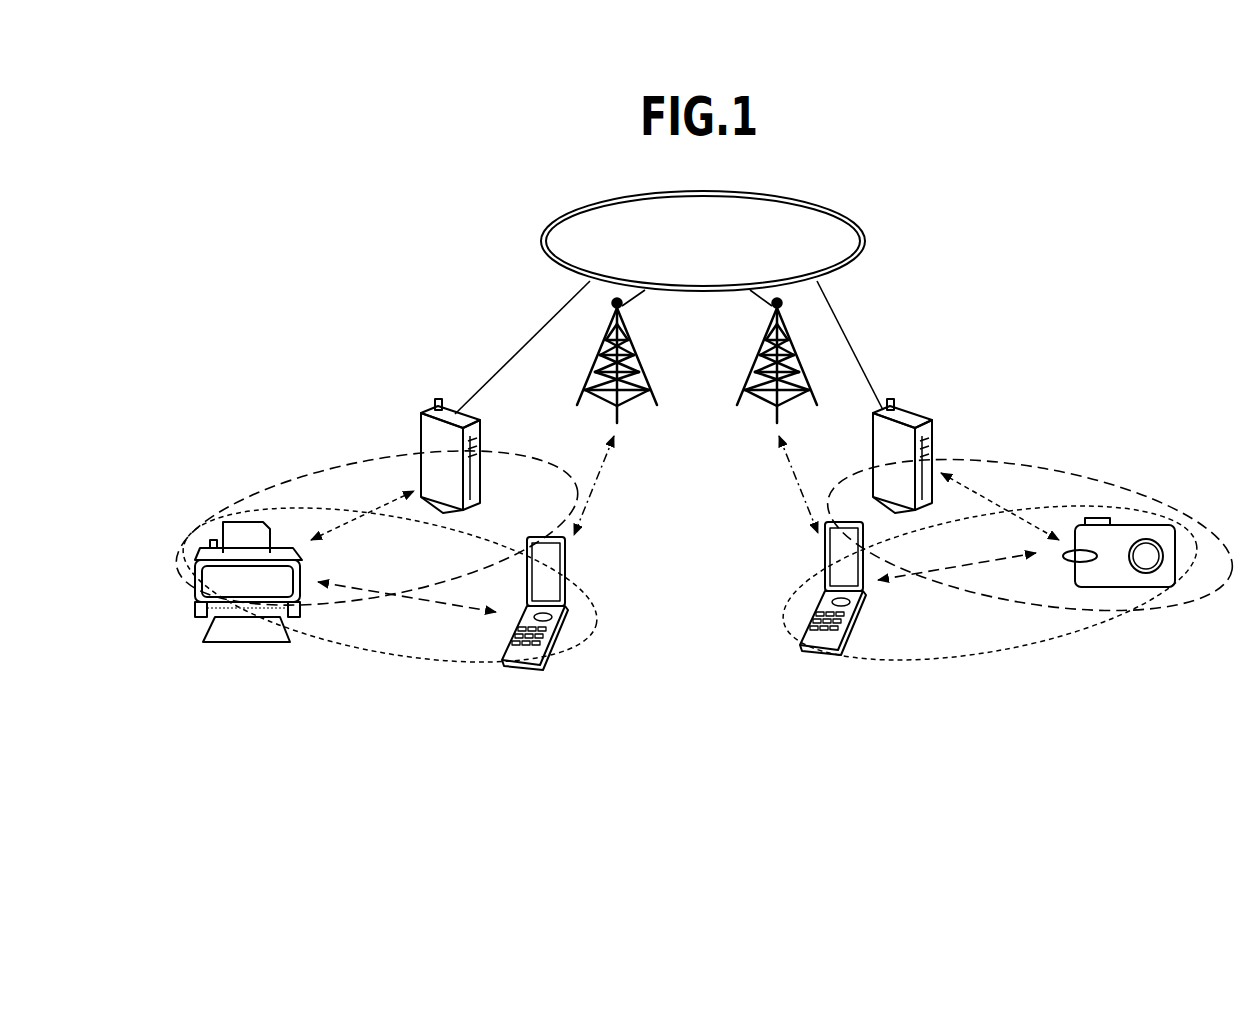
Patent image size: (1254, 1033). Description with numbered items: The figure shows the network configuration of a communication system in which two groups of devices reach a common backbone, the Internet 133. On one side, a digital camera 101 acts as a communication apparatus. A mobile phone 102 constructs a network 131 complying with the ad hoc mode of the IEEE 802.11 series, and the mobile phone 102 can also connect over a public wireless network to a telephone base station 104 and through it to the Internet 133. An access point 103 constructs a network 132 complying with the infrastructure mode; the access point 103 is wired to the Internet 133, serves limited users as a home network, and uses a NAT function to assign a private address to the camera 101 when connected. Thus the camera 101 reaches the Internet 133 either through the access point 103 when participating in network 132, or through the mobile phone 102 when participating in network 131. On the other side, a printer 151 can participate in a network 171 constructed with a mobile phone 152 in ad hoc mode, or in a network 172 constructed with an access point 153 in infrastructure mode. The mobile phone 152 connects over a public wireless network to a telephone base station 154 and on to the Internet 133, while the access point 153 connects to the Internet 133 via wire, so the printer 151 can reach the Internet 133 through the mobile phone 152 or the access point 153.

The digital camera 101 is at (1150, 523).
The mobile phone 102 is at (815, 612).
The access point 103 is at (915, 412).
The telephone base station 104 is at (760, 407).
The network 131 is at (927, 665).
The network 132 is at (1060, 606).
The Internet 133 is at (863, 224).
The printer 151 is at (244, 521).
The mobile phone 152 is at (558, 633).
The access point 153 is at (453, 412).
The telephone base station 154 is at (627, 408).
The network 171 is at (373, 668).
The network 172 is at (358, 456).